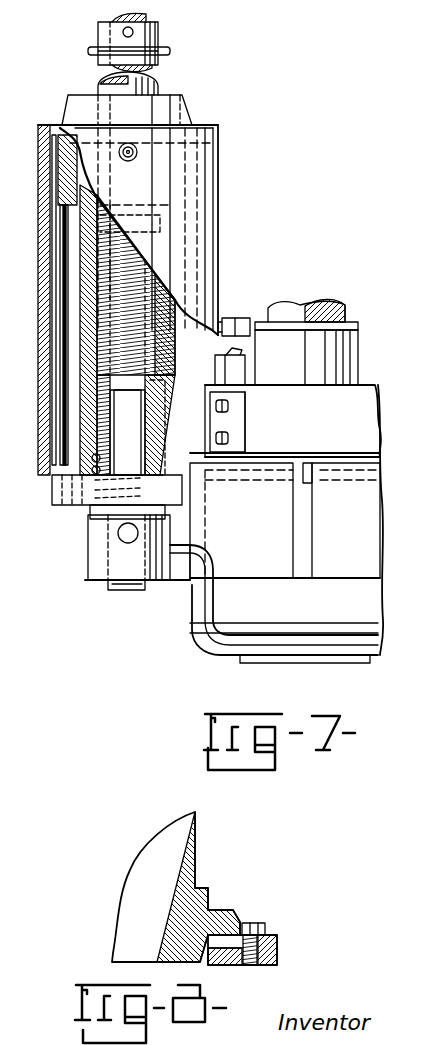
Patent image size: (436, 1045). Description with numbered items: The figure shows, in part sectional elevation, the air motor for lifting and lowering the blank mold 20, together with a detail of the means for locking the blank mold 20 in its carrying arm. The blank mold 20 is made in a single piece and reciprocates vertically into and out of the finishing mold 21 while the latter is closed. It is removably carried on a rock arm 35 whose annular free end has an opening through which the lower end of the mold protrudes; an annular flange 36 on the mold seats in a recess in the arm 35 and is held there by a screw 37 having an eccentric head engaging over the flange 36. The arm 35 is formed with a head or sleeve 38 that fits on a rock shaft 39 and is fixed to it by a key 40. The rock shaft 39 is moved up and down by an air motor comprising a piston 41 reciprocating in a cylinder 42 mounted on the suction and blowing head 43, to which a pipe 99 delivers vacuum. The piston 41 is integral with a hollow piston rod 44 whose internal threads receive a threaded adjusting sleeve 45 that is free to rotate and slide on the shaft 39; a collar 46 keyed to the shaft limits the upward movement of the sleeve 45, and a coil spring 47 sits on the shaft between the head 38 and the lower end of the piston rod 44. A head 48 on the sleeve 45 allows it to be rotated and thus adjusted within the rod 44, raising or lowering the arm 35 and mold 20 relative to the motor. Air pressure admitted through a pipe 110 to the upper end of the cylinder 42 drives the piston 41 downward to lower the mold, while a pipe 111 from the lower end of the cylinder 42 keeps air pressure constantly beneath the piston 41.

In FIG. 8, the blank mold 20 is at (192, 862).
In FIG. 7, the finishing mold 21 is at (245, 598).
In FIG. 7, the rock arm 35 is at (198, 624).
In FIG. 8, the rock arm 35 is at (278, 953).
In FIG. 8, the annular flange 36 is at (238, 922).
In FIG. 8, the screw 37 is at (262, 925).
In FIG. 7, the head or sleeve 38 is at (88, 561).
In FIG. 7, the rock shaft 39 is at (120, 590).
In FIG. 7, the key 40 is at (115, 533).
In FIG. 7, the piston 41 is at (40, 170).
In FIG. 7, the cylinder 42 is at (40, 258).
In FIG. 7, the suction and blowing head 43 is at (355, 393).
In FIG. 7, the hollow piston rod 44 is at (62, 297).
In FIG. 7, the threaded adjusting sleeve 45 is at (82, 393).
In FIG. 7, the collar 46 is at (160, 30).
In FIG. 7, the coil spring 47 is at (95, 470).
In FIG. 7, the head 48 is at (170, 51).
In FIG. 7, the pipe 99 is at (240, 362).
In FIG. 7, the pipe 110 is at (137, 147).
In FIG. 7, the pipe 111 is at (243, 322).